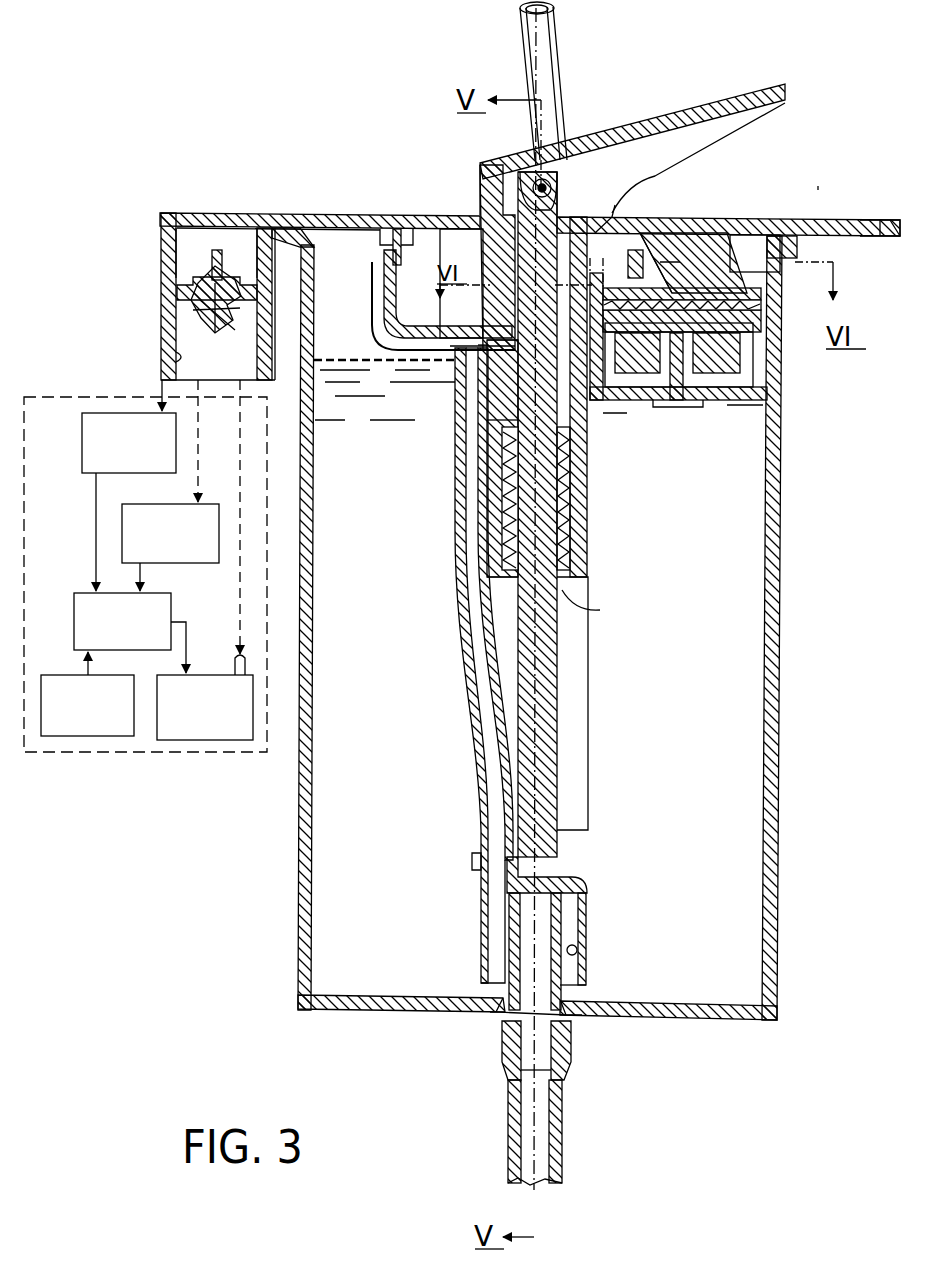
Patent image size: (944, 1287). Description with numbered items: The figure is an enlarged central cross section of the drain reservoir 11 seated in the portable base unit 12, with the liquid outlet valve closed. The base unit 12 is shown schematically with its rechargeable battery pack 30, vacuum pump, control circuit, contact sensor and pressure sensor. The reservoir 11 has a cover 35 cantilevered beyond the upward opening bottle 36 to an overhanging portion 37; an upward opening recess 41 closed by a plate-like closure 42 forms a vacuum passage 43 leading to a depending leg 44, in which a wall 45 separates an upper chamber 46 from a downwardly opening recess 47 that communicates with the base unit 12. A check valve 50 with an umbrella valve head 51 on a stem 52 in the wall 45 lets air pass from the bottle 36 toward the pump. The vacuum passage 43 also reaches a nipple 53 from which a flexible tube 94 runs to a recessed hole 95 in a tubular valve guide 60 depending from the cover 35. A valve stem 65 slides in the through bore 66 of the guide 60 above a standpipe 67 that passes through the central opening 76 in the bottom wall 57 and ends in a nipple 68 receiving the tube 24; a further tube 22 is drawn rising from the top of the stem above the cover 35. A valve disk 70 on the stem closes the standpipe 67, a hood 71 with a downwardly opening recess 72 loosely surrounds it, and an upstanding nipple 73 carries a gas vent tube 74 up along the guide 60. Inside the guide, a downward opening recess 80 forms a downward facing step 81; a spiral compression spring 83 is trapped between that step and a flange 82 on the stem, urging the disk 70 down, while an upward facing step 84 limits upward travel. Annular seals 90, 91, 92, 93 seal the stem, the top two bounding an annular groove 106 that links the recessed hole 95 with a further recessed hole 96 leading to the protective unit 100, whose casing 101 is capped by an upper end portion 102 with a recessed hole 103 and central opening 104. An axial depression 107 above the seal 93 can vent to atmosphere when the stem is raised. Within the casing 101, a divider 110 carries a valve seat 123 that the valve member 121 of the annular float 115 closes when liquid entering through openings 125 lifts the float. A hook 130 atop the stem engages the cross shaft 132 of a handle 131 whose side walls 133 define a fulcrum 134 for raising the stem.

The reservoir 11 is at (818, 187).
The portable base unit 12 is at (155, 763).
The suction tube 22 is at (541, 62).
The tube 24 is at (562, 1113).
The battery pack 30 is at (62, 738).
The cover 35 is at (850, 230).
The bottle 36 is at (299, 844).
The overhanging portion 37 is at (165, 211).
The upward opening recess 41 is at (358, 224).
The plate-like closure 42 is at (297, 226).
The vacuum passage 43 is at (262, 232).
The leg 44 is at (240, 296).
The wall 45 is at (192, 280).
The upper chamber 46 is at (186, 250).
The downwardly opening recess 47 is at (178, 360).
The check valve 50 is at (198, 296).
The umbrella valve head 51 is at (208, 320).
The stem 52 is at (212, 258).
The nipple 53 is at (392, 256).
The bottom wall 57 is at (700, 1019).
The tubular valve guide 60 is at (582, 524).
The valve stem 65 is at (568, 648).
The through bore 66 is at (480, 420).
The standpipe 67 is at (561, 936).
The nipple 68 is at (570, 1052).
The valve disk 70 is at (570, 892).
The hood 71 is at (586, 907).
The downwardly opening recess 72 is at (578, 952).
The upstanding nipple 73 is at (476, 852).
The gas vent tube 74 is at (470, 716).
The central opening 76 is at (578, 1002).
The downward opening recess 80 is at (495, 542).
The downward facing step 81 is at (490, 482).
The flange 82 is at (578, 590).
The spiral compression spring 83 is at (500, 577).
The upward facing step 84 is at (490, 512).
The annular seal 90 is at (498, 448).
The annular seal 91 is at (472, 402).
The annular seal 92 is at (482, 366).
The annular seal 93 is at (493, 266).
The flexible tube 94 is at (384, 322).
The recessed hole 95 is at (440, 340).
The recessed hole 96 is at (594, 290).
The protective unit 100 is at (722, 410).
The casing 101 is at (762, 294).
The upper end portion 102 is at (722, 236).
The recessed hole 103 is at (634, 249).
The central opening 104 is at (685, 230).
The annular groove 106 is at (490, 265).
The axial depression 107 is at (518, 162).
The divider 110 is at (720, 323).
The float 115 is at (760, 373).
The valve member 121 is at (748, 350).
The valve seat 123 is at (761, 305).
The openings 125 is at (622, 400).
The hook 130 is at (562, 165).
The handle 131 is at (658, 108).
The cross shaft 132 is at (551, 185).
The side walls 133 is at (698, 158).
The fulcrum 134 is at (608, 213).